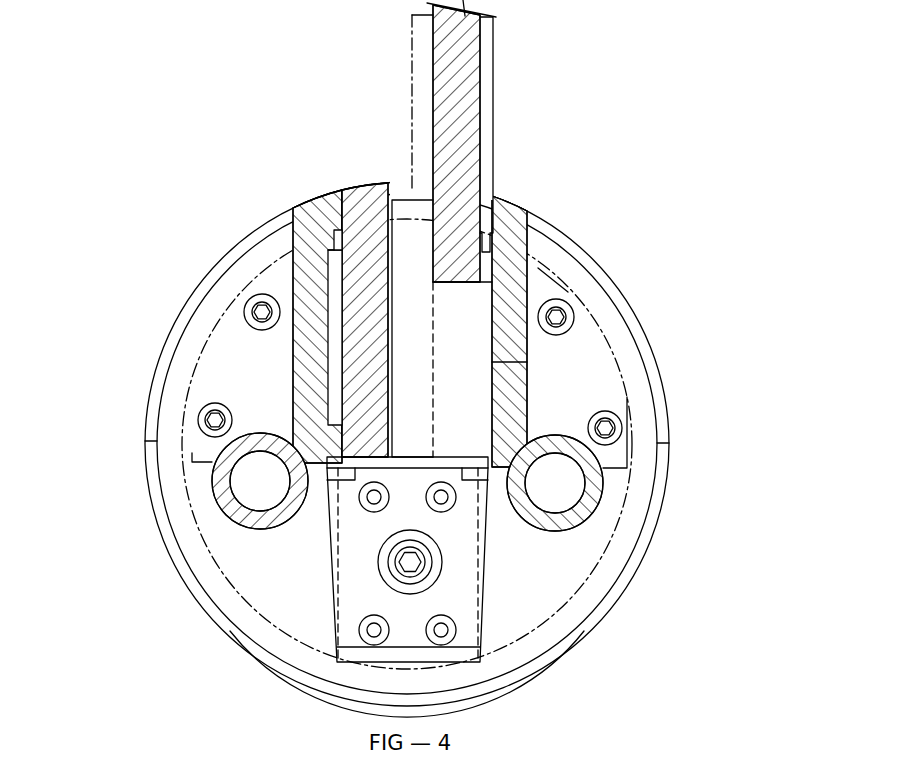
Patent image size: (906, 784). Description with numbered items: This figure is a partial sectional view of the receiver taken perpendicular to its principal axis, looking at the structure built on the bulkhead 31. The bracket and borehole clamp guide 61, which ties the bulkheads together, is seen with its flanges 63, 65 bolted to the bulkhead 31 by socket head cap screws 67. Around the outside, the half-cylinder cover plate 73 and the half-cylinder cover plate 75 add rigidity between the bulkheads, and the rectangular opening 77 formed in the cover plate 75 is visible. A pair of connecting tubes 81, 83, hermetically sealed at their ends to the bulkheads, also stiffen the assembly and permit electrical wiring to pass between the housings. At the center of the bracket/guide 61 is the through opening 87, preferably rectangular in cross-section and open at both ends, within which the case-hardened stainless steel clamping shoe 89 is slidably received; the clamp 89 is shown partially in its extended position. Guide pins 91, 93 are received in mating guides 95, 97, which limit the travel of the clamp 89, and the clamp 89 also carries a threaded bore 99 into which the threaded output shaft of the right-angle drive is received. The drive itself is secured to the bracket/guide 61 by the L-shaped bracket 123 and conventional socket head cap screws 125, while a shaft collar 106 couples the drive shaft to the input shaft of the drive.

The bulkhead 31 is at (247, 548).
The bracket and borehole clamp guide 61 is at (293, 368).
The flange 63 is at (238, 390).
The flange 65 is at (597, 397).
The socket head cap screw 67 is at (247, 313).
The half-cylinder cover plate 73 is at (665, 467).
The half-cylinder cover plate 75 is at (653, 237).
The rectangular opening 77 is at (394, 182).
The connecting tube 81 is at (222, 492).
The connecting tube 83 is at (597, 498).
The through opening 87 is at (340, 305).
The clamping shoe 89 is at (493, 33).
The guide pin 91 is at (327, 232).
The guide pin 93 is at (496, 205).
The guide 95 is at (343, 318).
The guide 97 is at (485, 72).
The threaded bore 99 is at (380, 188).
The shaft collar 106 is at (422, 578).
The L-shaped bracket 123 is at (460, 547).
The socket head cap screw 125 is at (433, 508).